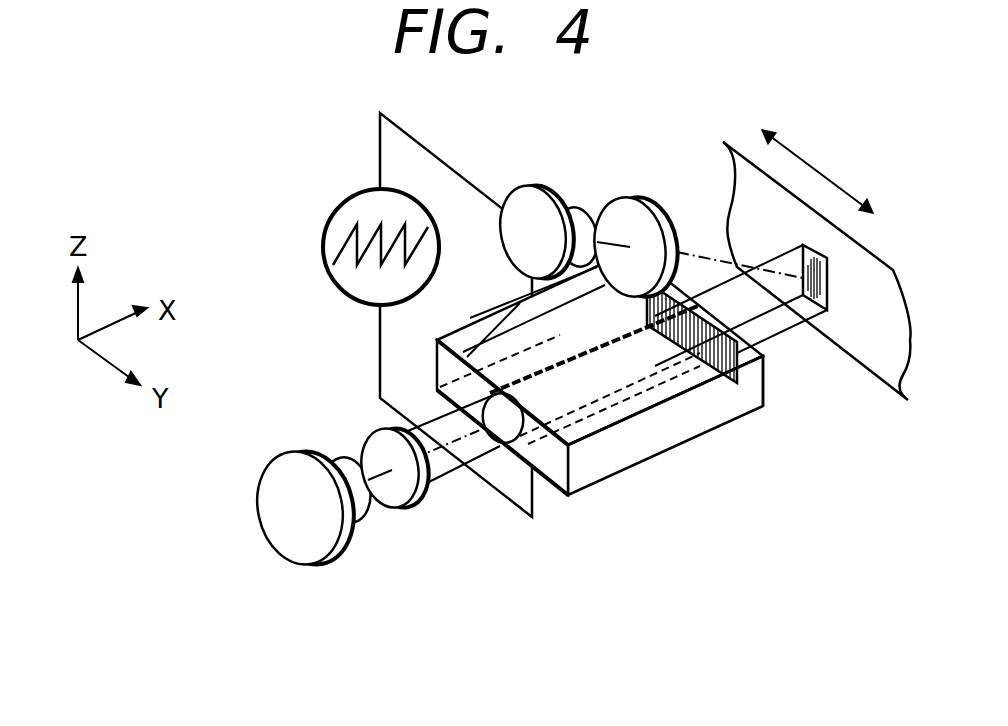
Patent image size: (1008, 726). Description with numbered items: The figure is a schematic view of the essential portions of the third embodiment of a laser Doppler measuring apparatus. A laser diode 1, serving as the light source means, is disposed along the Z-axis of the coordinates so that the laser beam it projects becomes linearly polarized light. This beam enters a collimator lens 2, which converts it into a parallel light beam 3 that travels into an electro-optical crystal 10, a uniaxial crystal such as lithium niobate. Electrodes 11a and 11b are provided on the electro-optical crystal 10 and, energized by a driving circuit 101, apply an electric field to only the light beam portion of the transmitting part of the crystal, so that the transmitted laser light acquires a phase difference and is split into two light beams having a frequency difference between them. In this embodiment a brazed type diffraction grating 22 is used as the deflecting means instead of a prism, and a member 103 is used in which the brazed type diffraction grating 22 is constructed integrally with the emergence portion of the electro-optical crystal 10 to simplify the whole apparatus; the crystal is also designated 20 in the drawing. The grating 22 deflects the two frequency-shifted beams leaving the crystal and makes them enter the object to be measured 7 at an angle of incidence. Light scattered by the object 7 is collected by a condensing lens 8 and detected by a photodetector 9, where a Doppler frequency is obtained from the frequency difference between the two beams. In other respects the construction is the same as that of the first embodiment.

The laser diode 1 is at (273, 477).
The collimator lens 2 is at (373, 442).
The parallel light beam 3 is at (445, 470).
The object to be measured 7 is at (860, 347).
The condensing lens 8 is at (625, 200).
The photodetector 9 is at (527, 200).
The electro-optical crystal 10 is at (601, 395).
The sample cell 20 is at (683, 425).
The electrode 11a is at (513, 323).
The electrode 11b is at (433, 407).
The brazed type diffraction grating 22 is at (737, 367).
The driving circuit 101 is at (331, 213).
The member 103 is at (760, 417).